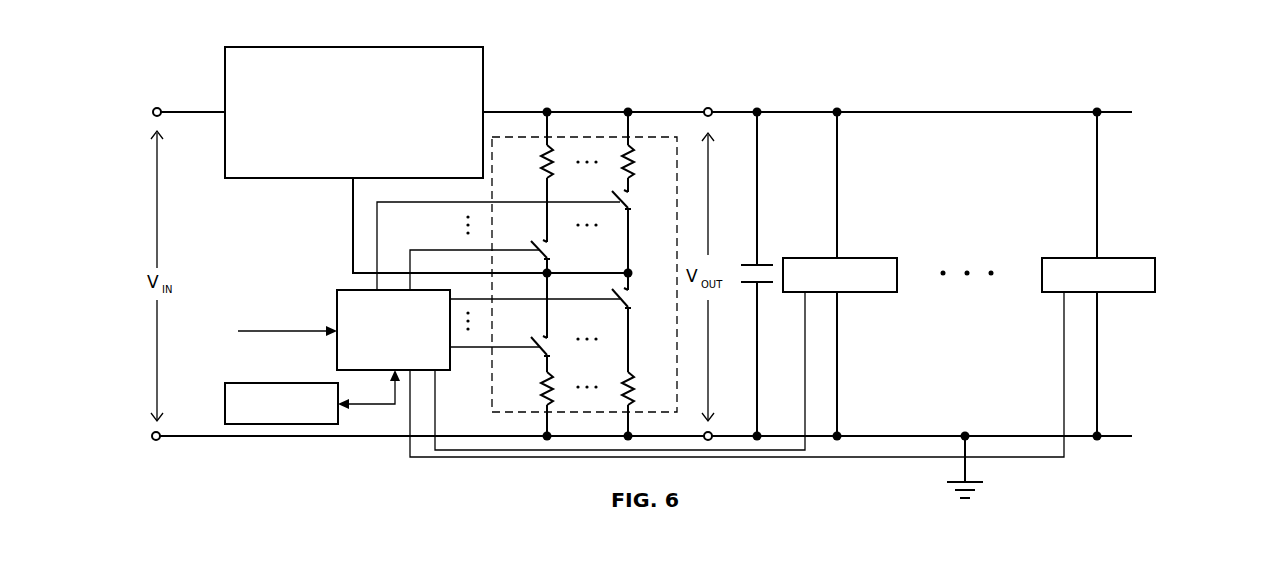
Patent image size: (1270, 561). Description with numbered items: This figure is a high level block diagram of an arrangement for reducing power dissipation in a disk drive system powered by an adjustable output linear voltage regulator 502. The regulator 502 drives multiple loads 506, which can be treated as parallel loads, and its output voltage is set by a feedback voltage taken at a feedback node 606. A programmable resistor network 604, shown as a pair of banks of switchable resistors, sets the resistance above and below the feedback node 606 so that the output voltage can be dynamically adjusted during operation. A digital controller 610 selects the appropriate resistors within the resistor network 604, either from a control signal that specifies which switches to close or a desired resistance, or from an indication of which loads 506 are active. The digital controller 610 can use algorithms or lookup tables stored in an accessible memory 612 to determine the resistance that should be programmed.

The adjustable output linear voltage regulator 502 is at (483, 63).
The loads 506 is at (880, 258).
The programmable resistor network 604 is at (492, 357).
The feedback node 606 is at (551, 270).
The digital controller 610 is at (337, 289).
The memory 612 is at (232, 383).